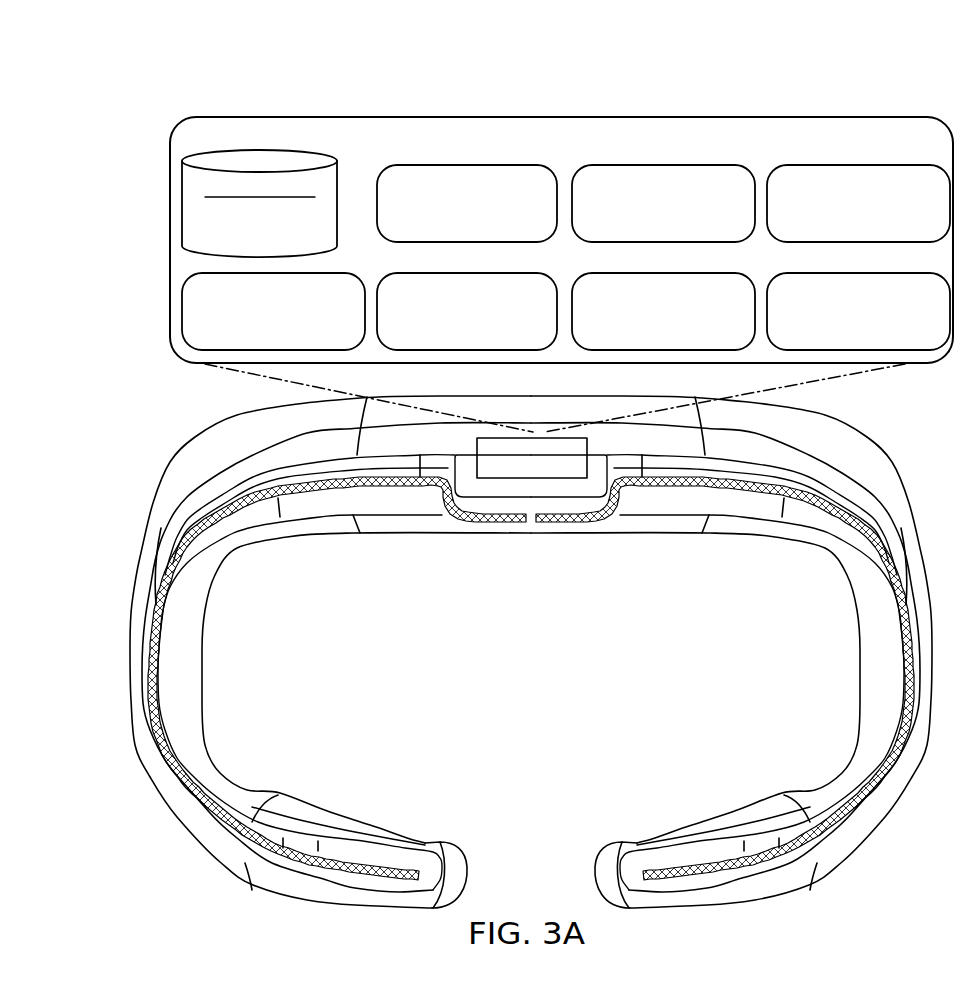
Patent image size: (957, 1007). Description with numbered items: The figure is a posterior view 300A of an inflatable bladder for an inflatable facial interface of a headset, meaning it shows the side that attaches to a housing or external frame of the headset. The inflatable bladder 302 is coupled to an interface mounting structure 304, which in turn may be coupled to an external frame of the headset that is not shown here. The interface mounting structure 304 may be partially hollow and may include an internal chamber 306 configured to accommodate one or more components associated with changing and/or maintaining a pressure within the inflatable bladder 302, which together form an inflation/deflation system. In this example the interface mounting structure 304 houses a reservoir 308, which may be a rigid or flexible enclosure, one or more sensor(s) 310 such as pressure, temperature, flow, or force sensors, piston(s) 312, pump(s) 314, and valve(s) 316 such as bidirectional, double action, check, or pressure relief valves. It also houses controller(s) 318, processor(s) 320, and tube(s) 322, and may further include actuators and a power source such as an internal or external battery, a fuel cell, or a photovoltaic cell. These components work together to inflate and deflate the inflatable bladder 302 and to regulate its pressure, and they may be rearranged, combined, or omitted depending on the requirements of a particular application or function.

The posterior view 300A is at (196, 82).
The inflatable bladder 302 is at (233, 442).
The interface mounting structure 304 is at (738, 153).
The internal chamber 306 is at (757, 492).
The reservoir 308 is at (277, 231).
The sensor(s) 310 is at (540, 218).
The piston(s) 312 is at (595, 218).
The pump(s) 314 is at (795, 218).
The valve(s) 316 is at (337, 325).
The controller(s) 318 is at (485, 342).
The processor(s) 320 is at (680, 342).
The tube(s) 322 is at (917, 325).